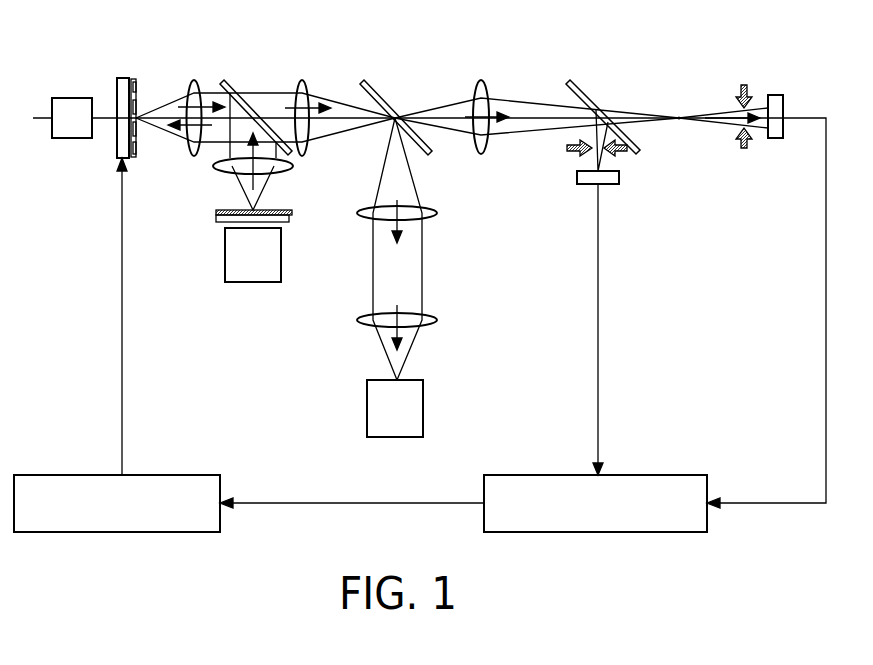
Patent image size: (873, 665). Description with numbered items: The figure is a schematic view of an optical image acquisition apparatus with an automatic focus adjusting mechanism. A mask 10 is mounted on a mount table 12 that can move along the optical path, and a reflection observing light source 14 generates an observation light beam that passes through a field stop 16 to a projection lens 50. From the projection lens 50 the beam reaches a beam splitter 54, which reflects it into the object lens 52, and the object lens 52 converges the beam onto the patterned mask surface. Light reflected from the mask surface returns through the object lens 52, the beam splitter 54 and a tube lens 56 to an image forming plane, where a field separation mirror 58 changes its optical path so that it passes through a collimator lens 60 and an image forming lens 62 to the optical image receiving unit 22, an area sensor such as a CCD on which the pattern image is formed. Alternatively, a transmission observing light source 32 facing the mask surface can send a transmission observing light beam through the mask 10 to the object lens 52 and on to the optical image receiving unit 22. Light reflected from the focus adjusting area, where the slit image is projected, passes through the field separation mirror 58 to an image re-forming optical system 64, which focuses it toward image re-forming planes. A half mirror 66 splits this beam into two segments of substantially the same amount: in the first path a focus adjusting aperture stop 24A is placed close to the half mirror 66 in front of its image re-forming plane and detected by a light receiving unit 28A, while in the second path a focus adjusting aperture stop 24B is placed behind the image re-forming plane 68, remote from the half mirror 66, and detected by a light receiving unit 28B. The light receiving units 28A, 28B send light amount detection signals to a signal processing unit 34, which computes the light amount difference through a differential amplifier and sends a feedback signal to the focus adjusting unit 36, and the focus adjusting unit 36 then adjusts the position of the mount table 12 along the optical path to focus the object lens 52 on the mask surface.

The mask 10 is at (139, 79).
The mount table 12 is at (123, 78).
The reflection observing light source 14 is at (281, 250).
The field stop 16 is at (292, 210).
The optical image receiving unit 22 is at (415, 408).
The focus adjusting aperture stop 24A is at (580, 151).
The focus adjusting aperture stop 24B is at (744, 84).
The light receiving unit 28A is at (619, 177).
The light receiving unit 28B is at (775, 95).
The transmission observing light source 32 is at (72, 98).
The signal processing unit 34 is at (612, 532).
The focus adjusting unit 36 is at (155, 532).
The projection lens 50 is at (293, 166).
The object lens 52 is at (194, 78).
The beam splitter 54 is at (228, 82).
The tube lens 56 is at (302, 78).
The field separation mirror 58 is at (368, 82).
The collimator lens 60 is at (437, 213).
The image forming lens 62 is at (437, 320).
The image re-forming optical system 64 is at (481, 80).
The half mirror 66 is at (575, 84).
The image re-forming plane 68 is at (679, 98).